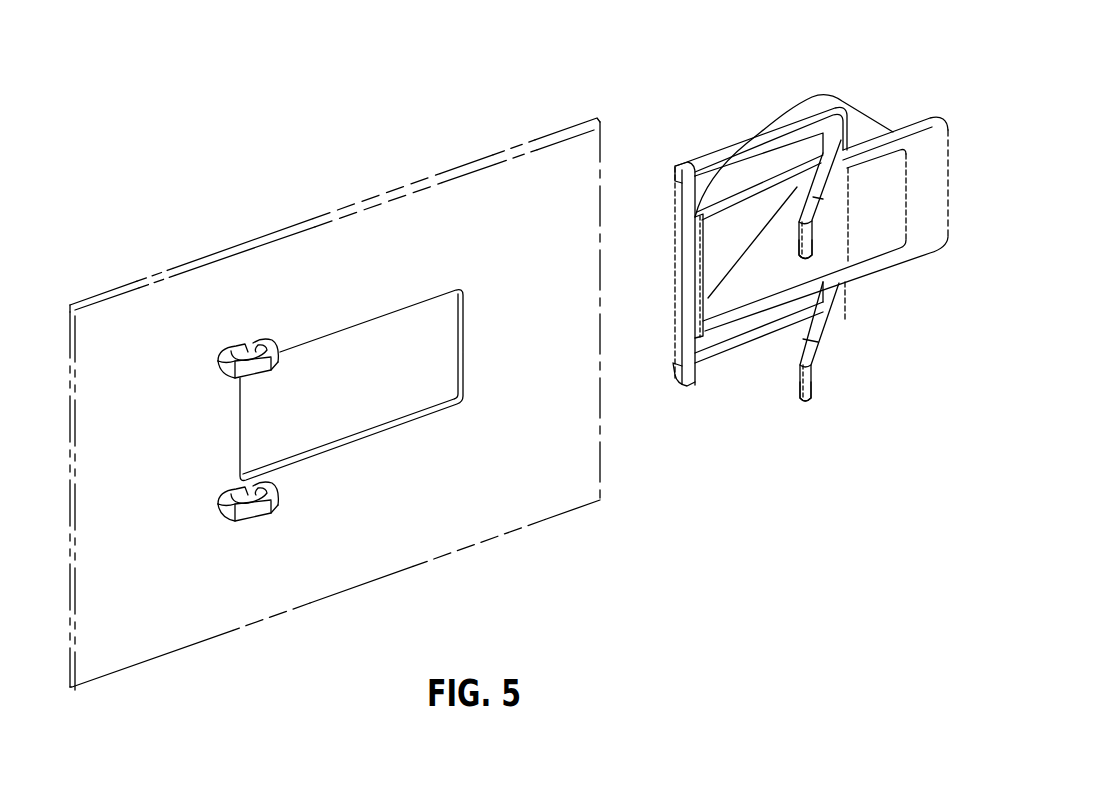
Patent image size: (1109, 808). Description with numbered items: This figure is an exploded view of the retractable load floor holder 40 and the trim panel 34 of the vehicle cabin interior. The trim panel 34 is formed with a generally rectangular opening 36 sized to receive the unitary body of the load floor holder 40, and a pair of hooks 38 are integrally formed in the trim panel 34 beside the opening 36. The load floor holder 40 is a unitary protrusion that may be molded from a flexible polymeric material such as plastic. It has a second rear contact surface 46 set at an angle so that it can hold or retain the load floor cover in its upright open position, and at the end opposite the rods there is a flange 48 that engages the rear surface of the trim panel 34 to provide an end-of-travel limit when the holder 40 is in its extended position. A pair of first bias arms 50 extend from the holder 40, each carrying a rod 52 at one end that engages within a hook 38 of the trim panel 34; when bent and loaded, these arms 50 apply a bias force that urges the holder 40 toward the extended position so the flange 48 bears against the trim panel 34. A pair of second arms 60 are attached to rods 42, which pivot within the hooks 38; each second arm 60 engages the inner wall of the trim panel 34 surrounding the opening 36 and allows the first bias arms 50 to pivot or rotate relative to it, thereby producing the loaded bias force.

The trim panel 34 is at (549, 172).
The rectangular opening 36 is at (377, 317).
The hook 38 is at (277, 347).
The retractable load floor holder 40 is at (887, 88).
The rod 42 is at (690, 378).
The second rear contact surface 46 is at (726, 228).
The flange 48 is at (933, 152).
The first bias arms 50 is at (818, 209).
The rod 52 is at (806, 251).
The second arms 60 is at (737, 157).